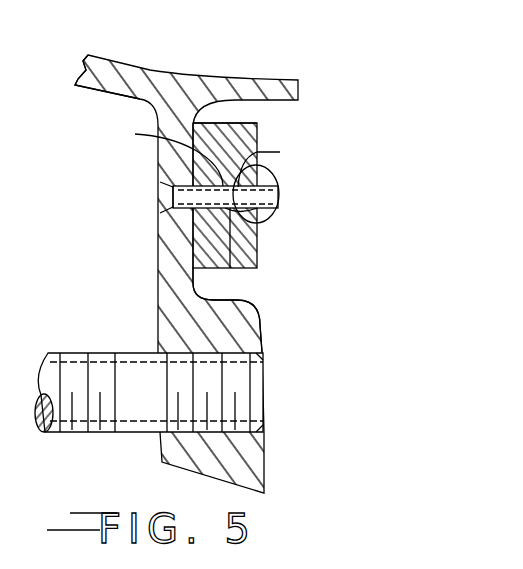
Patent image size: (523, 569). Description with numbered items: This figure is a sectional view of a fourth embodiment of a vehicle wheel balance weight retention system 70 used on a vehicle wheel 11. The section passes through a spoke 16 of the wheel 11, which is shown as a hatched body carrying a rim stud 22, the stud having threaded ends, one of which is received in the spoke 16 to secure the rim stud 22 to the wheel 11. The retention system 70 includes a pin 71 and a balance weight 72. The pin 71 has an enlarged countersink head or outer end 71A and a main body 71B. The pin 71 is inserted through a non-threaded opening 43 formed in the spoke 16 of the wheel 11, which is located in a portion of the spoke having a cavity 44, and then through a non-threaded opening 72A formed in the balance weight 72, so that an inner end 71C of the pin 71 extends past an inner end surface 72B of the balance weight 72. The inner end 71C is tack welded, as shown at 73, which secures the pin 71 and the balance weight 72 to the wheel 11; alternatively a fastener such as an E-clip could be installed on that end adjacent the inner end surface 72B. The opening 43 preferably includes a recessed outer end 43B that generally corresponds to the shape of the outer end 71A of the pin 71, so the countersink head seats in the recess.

The wheel 11 is at (108, 52).
The spoke 16 is at (96, 94).
The rim stud 22 is at (122, 434).
The non-threaded opening 43 is at (170, 206).
The recessed outer end 43B is at (166, 186).
The cavity 44 is at (235, 270).
The vehicle wheel balance weight retention system 70 is at (209, 160).
The pin 71 is at (204, 214).
The outer end 71A is at (168, 200).
The main body 71B is at (207, 154).
The inner end 71C is at (256, 201).
The balance weight 72 is at (269, 189).
The non-threaded opening 72A is at (277, 206).
The inner end surface 72B is at (258, 124).
The tack weld 73 is at (270, 175).